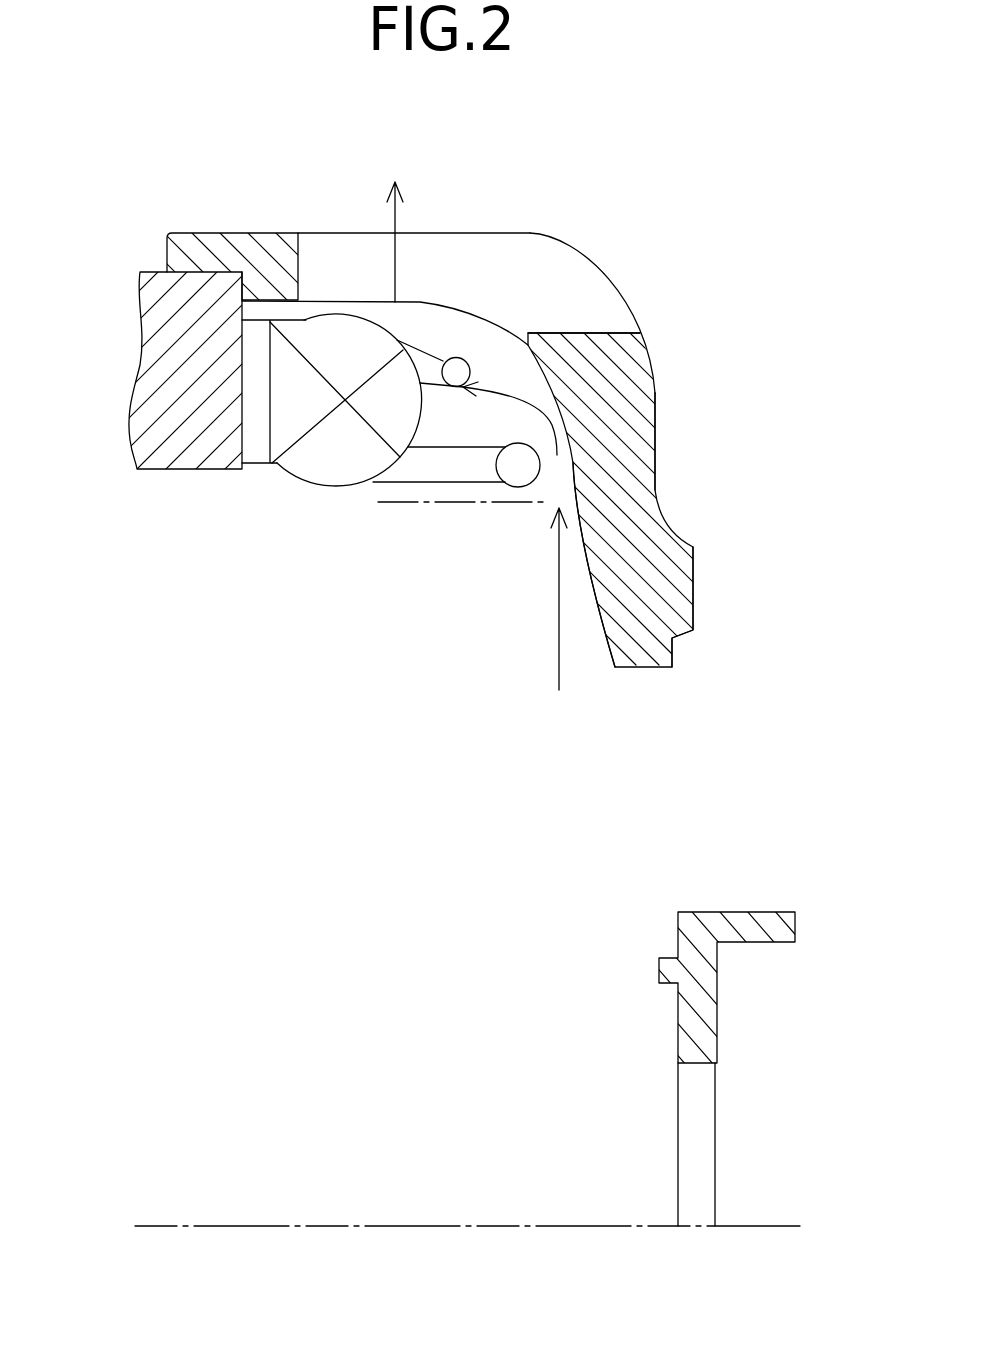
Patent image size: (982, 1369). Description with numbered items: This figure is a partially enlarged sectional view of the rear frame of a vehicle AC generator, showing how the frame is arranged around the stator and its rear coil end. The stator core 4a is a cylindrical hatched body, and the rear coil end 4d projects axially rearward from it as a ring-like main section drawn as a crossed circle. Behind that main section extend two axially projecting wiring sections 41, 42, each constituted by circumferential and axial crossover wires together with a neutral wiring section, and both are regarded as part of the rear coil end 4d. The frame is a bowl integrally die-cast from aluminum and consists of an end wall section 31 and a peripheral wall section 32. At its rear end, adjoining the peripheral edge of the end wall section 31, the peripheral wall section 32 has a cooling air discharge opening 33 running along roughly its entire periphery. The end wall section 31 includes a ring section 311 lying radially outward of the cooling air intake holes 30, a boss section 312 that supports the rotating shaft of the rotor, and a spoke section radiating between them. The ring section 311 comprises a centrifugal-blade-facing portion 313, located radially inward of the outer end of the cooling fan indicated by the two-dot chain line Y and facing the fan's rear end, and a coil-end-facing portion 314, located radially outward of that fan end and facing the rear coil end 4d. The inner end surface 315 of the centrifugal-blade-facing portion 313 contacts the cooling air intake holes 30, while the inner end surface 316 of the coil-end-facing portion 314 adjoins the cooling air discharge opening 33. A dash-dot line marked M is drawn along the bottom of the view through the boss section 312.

The cooling air intake holes 30 is at (608, 793).
The end wall section 31 is at (668, 390).
The ring section 311 is at (668, 424).
The boss section 312 is at (755, 915).
The centrifugal-blade-facing portion 313 is at (682, 580).
The coil-end-facing portion 314 is at (637, 362).
The inner end surface of the centrifugal-blade-facing portion 315 is at (604, 616).
The inner end surface of the coil-end-facing portion 316 is at (560, 393).
The peripheral wall section 32 is at (256, 245).
The cooling air discharge opening 33 is at (452, 248).
The axially projecting wiring section 41 is at (530, 464).
The axially projecting wiring section 42 is at (465, 361).
The stator core 4a is at (183, 466).
The rear coil end 4d is at (330, 478).
The two-dot chain line Y is at (455, 505).
The axis M is at (451, 1225).